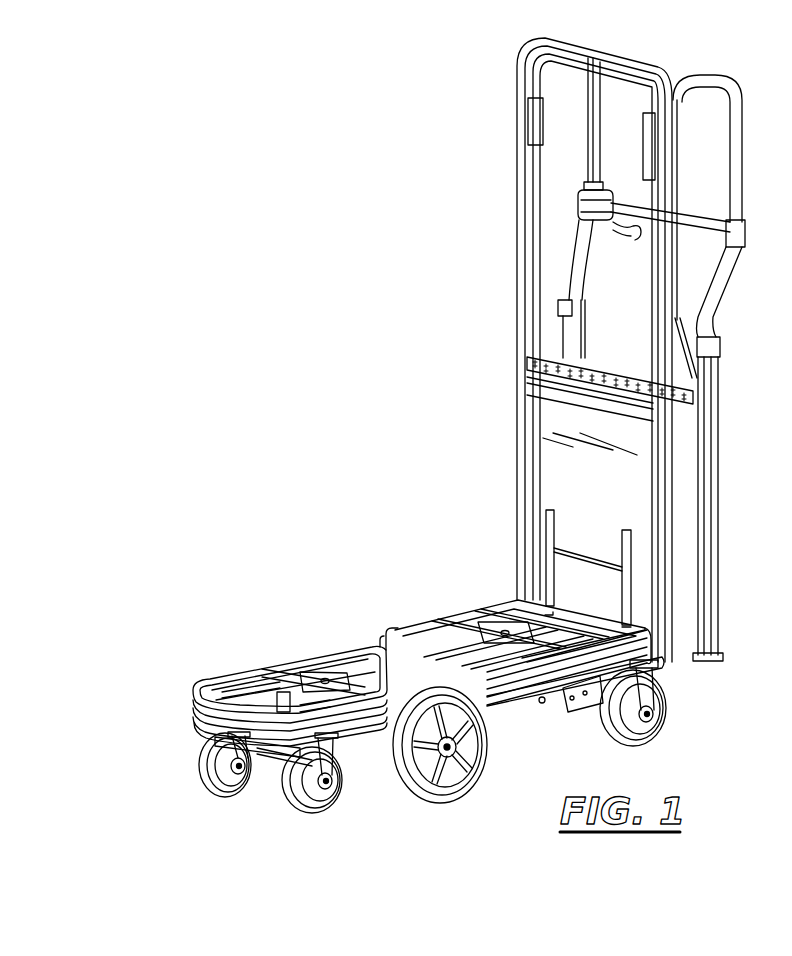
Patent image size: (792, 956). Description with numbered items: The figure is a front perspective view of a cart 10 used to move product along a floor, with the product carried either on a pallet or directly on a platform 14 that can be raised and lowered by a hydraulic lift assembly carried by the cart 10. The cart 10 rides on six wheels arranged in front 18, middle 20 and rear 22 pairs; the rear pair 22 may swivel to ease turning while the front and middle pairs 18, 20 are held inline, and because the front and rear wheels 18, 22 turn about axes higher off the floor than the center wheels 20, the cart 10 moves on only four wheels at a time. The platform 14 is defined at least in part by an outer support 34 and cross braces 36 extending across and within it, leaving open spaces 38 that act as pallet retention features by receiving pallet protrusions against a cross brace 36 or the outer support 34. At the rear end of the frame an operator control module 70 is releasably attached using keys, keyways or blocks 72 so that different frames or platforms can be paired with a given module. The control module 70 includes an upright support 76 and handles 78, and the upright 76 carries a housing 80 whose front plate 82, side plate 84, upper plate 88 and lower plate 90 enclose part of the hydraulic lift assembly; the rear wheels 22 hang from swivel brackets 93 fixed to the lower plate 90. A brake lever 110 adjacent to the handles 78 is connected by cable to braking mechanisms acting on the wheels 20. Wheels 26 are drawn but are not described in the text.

The cart 10 is at (474, 478).
The platform 14 is at (312, 653).
The front pair of wheels 18 is at (285, 792).
The middle pair of wheels 20 is at (453, 793).
The rear pair of wheels 22 is at (658, 733).
The caster wheel 26 is at (227, 770).
The outer support 34 is at (397, 637).
The cross braces 36 is at (377, 672).
The open spaces 38 is at (253, 695).
The operator control module 70 is at (729, 505).
The blocks 72 is at (600, 707).
The upright support 76 is at (670, 165).
The handles 78 is at (590, 88).
The housing 80 is at (705, 580).
The front plate 82 is at (611, 498).
The side plate 84 is at (687, 613).
The upper plate 88 is at (563, 367).
The lower plate 90 is at (706, 660).
The swivel brackets 93 is at (657, 690).
The brake lever 110 is at (630, 232).